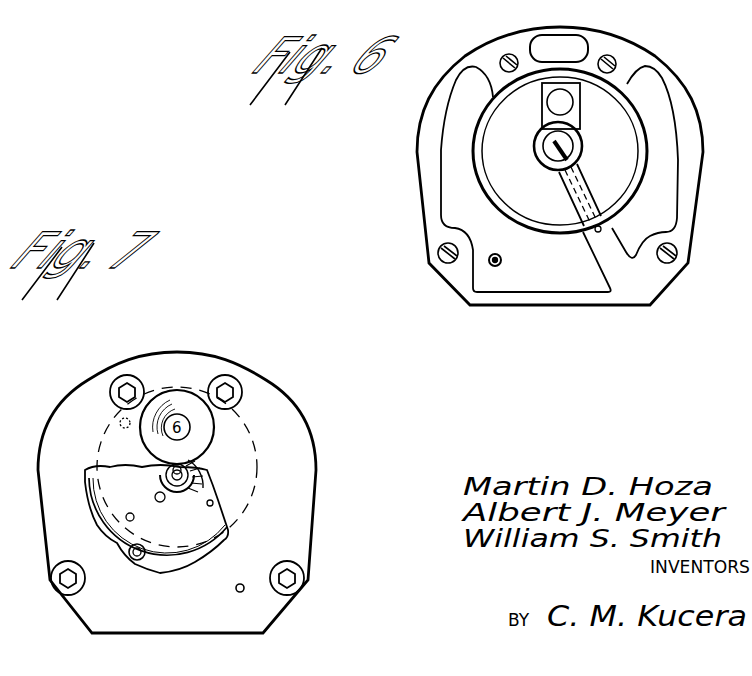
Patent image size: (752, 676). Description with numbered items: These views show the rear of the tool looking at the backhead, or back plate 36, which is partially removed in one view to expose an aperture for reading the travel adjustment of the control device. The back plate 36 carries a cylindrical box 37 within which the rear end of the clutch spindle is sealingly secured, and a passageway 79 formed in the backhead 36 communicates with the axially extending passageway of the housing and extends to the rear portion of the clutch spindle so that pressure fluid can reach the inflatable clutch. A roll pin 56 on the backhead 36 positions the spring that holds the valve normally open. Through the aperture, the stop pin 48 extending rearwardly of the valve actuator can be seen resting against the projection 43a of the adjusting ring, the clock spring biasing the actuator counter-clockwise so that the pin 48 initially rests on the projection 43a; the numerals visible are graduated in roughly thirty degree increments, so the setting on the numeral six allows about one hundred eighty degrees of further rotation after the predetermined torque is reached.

In FIG. 6, the back plate 36 is at (667, 72).
In FIG. 7, the back plate 36 is at (290, 403).
In FIG. 6, the cylindrical box 37 is at (584, 139).
In FIG. 6, the passageway 79 is at (590, 190).
In FIG. 6, the roll pin 56 is at (504, 260).
In FIG. 7, the roll pin 56 is at (235, 590).
In FIG. 7, the stop pin 48 is at (187, 473).
In FIG. 7, the projection 43a is at (207, 494).